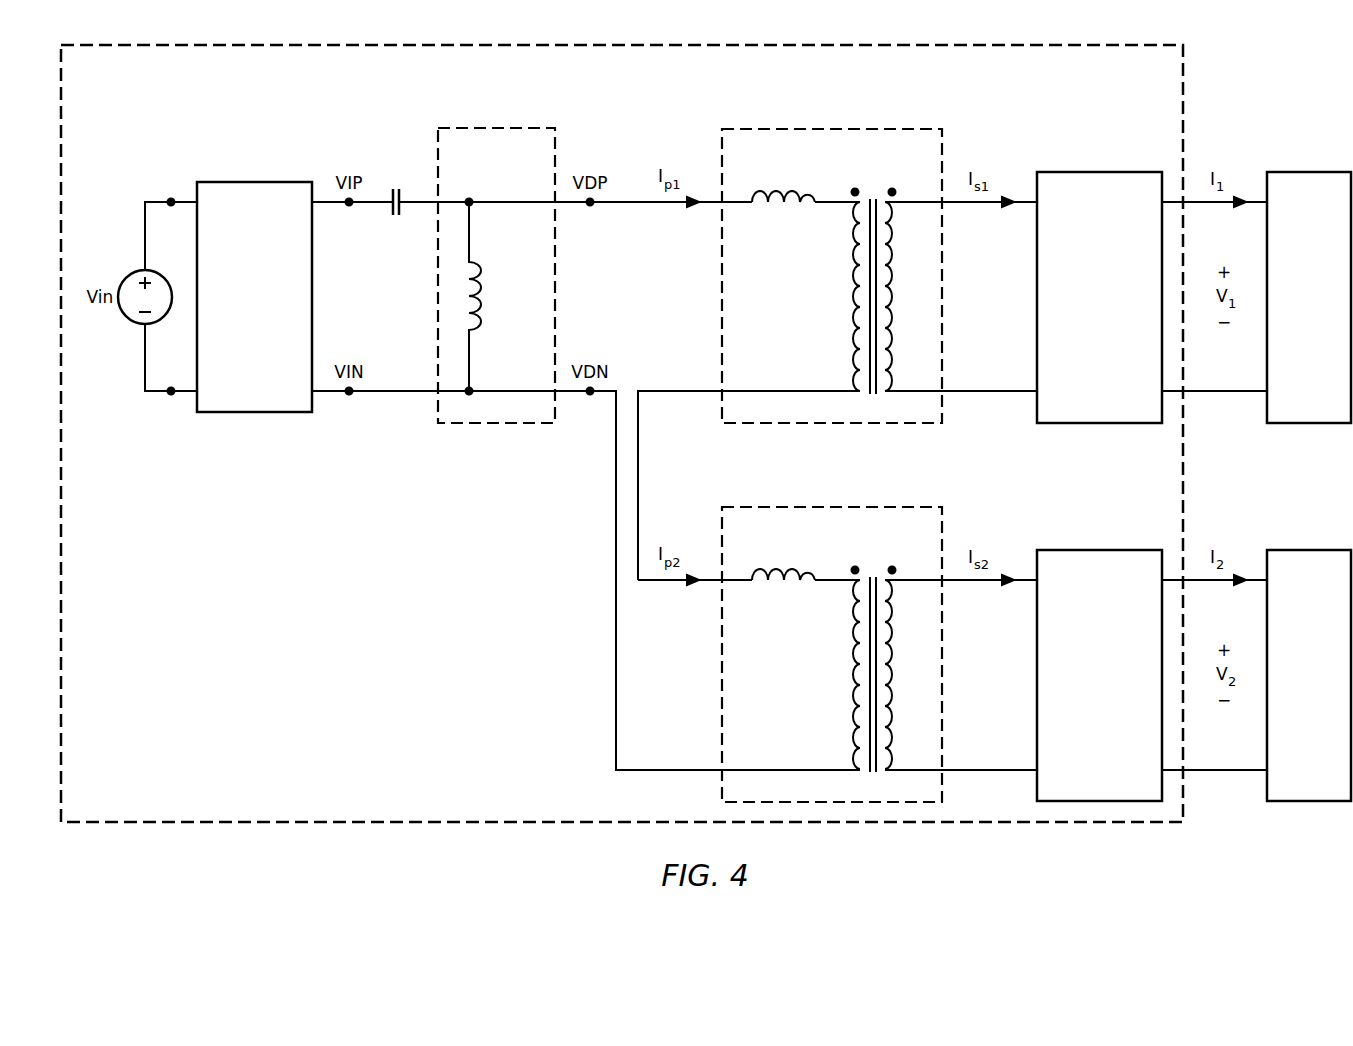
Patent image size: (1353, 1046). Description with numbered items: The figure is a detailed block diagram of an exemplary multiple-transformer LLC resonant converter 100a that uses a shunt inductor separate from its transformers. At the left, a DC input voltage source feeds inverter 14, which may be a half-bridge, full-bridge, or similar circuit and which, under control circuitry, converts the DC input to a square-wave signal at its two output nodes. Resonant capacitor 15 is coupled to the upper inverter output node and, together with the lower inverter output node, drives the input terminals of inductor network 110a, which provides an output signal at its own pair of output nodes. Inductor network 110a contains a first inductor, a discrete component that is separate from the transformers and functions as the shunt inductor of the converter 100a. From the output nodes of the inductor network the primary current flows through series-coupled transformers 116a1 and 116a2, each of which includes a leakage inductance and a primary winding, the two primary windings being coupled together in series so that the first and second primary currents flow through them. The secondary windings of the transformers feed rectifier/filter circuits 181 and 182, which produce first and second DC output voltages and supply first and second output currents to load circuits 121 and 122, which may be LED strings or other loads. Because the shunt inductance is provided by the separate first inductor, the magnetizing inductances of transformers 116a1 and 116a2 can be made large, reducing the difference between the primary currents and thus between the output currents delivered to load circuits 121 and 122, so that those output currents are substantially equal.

The multiple-transformer LLC resonant converter 100a is at (277, 834).
The inverter 14 is at (255, 182).
The resonant capacitor 15 is at (396, 218).
The inductor network 110a is at (485, 120).
The transformer 116a1 is at (843, 120).
The transformer 116a2 is at (843, 499).
The rectifier/filter circuit 181 is at (1098, 172).
The rectifier/filter circuit 182 is at (1098, 550).
The load circuit 121 is at (1312, 172).
The load circuit 122 is at (1312, 550).